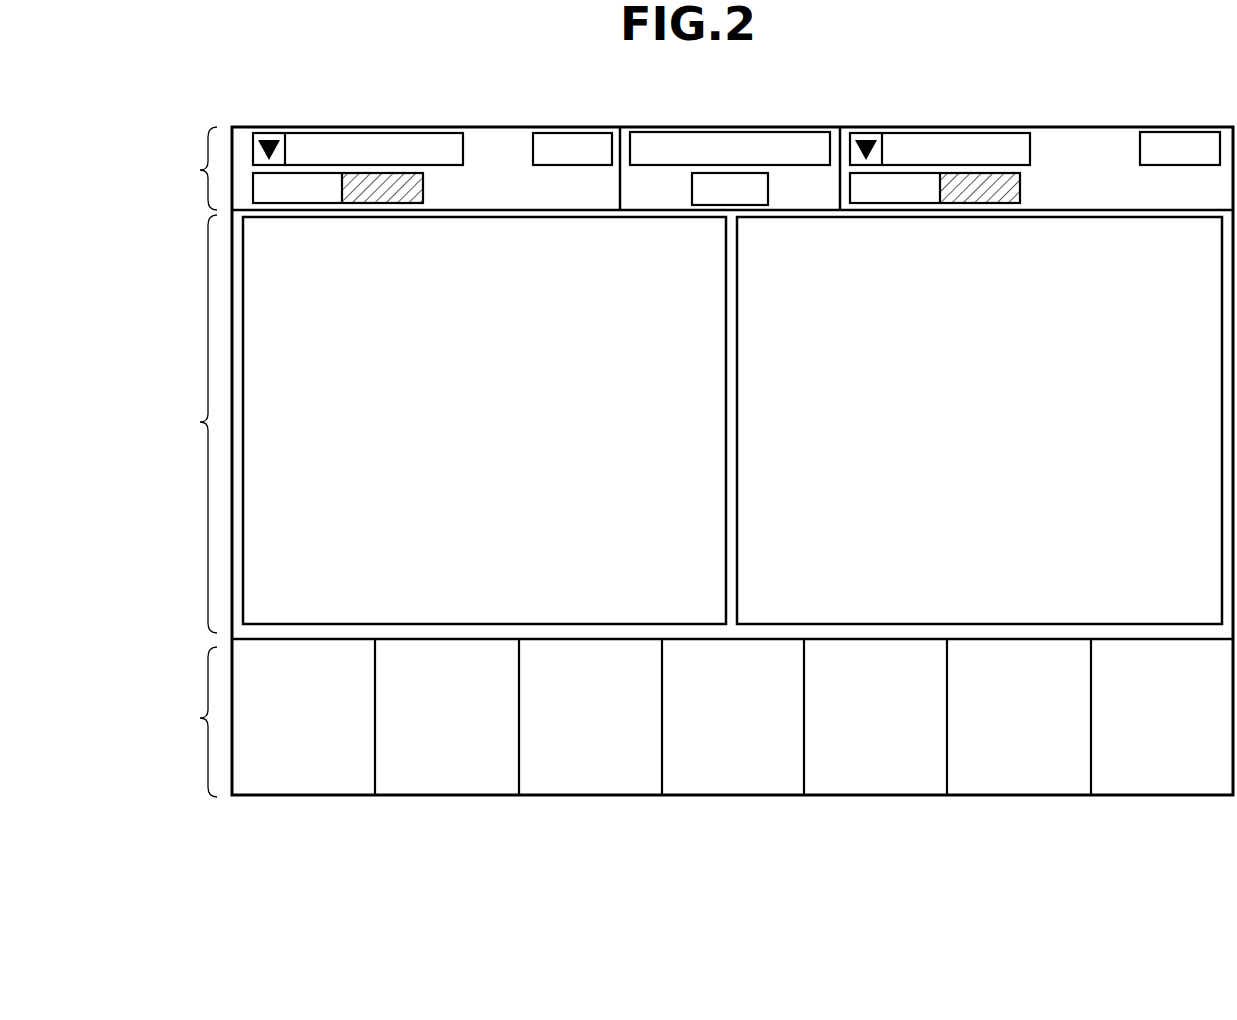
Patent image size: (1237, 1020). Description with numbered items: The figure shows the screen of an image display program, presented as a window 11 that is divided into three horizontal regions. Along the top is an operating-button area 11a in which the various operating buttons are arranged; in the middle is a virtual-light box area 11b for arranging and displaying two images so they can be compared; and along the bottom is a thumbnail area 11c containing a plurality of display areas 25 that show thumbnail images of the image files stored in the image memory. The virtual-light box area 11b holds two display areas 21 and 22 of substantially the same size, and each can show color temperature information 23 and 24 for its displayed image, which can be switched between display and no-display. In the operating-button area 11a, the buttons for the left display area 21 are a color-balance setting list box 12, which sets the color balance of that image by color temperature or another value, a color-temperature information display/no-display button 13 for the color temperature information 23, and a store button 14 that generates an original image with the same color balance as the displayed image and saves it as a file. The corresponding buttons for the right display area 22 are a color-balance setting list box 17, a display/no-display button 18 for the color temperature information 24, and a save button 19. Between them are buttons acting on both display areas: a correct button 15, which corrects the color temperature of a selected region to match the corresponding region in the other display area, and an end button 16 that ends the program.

The window 11 is at (808, 127).
The operating-button area 11a is at (181, 168).
The virtual-light box area 11b is at (181, 424).
The thumbnail area 11c is at (181, 722).
The color-balance setting list box 12 is at (366, 133).
The color-temperature information display/no-display button 13 is at (423, 188).
The store button 14 is at (568, 133).
The correct button 15 is at (726, 132).
The end button 16 is at (768, 188).
The color-balance setting list box 17 is at (954, 133).
The color temperature information display/no-display button 18 is at (1020, 188).
The save button 19 is at (1175, 132).
The display area 21 is at (523, 243).
The display area 22 is at (1083, 243).
The color temperature information 23 is at (658, 254).
The color temperature information 24 is at (1148, 254).
The display areas 25 is at (325, 763).